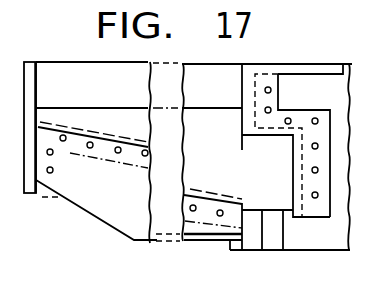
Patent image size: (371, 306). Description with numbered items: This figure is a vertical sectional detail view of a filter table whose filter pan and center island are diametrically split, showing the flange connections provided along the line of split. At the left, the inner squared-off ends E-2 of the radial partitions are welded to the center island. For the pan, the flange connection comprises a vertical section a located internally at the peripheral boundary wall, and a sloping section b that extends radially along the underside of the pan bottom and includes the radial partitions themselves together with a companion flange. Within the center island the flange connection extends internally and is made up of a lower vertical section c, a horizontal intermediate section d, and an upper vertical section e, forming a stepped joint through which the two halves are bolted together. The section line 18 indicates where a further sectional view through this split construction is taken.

The section line 18— 18 is at (227, 227).
The vertical section a is at (24, 130).
The sloping section b is at (70, 153).
The lower vertical section c is at (352, 111).
The horizontal intermediate section d is at (287, 145).
The upper vertical section e is at (224, 70).
The inner squared-off ends E-2 is at (9, 292).